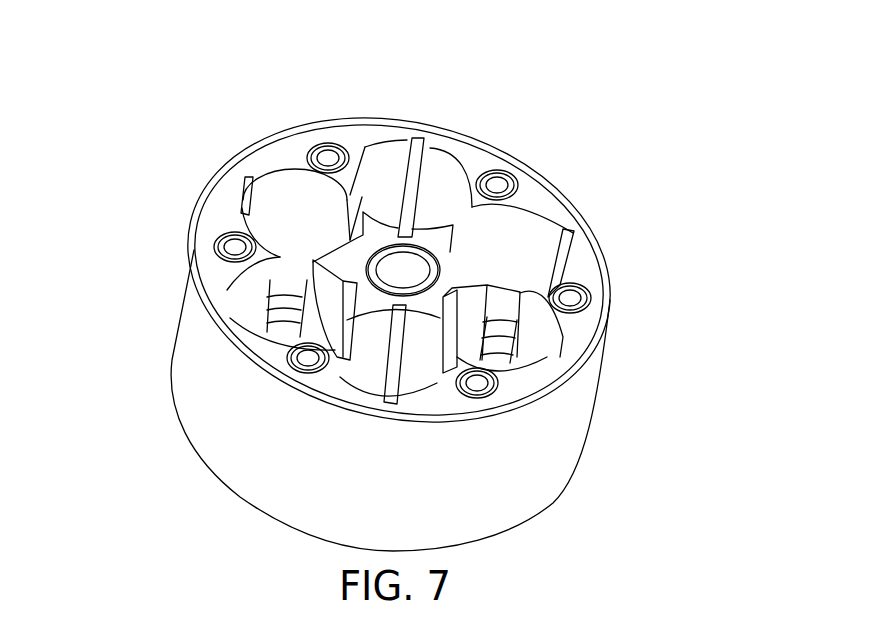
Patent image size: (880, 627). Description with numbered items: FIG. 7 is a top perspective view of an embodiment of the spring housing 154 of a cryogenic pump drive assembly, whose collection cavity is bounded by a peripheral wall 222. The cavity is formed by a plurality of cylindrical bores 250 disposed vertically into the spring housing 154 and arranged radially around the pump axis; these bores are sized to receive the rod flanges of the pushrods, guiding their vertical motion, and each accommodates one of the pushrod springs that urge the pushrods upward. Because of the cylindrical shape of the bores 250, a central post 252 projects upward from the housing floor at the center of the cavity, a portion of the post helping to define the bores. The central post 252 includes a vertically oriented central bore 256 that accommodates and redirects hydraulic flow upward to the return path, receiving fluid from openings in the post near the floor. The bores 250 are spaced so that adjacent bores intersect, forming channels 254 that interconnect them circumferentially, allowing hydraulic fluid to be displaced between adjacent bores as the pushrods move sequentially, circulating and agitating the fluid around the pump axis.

The spring housing 154 is at (166, 449).
The peripheral wall 222 is at (182, 305).
The cylindrical bores 250 is at (291, 181).
The central post 252 is at (450, 288).
The channels 254 is at (341, 197).
The central bore 256 is at (433, 271).